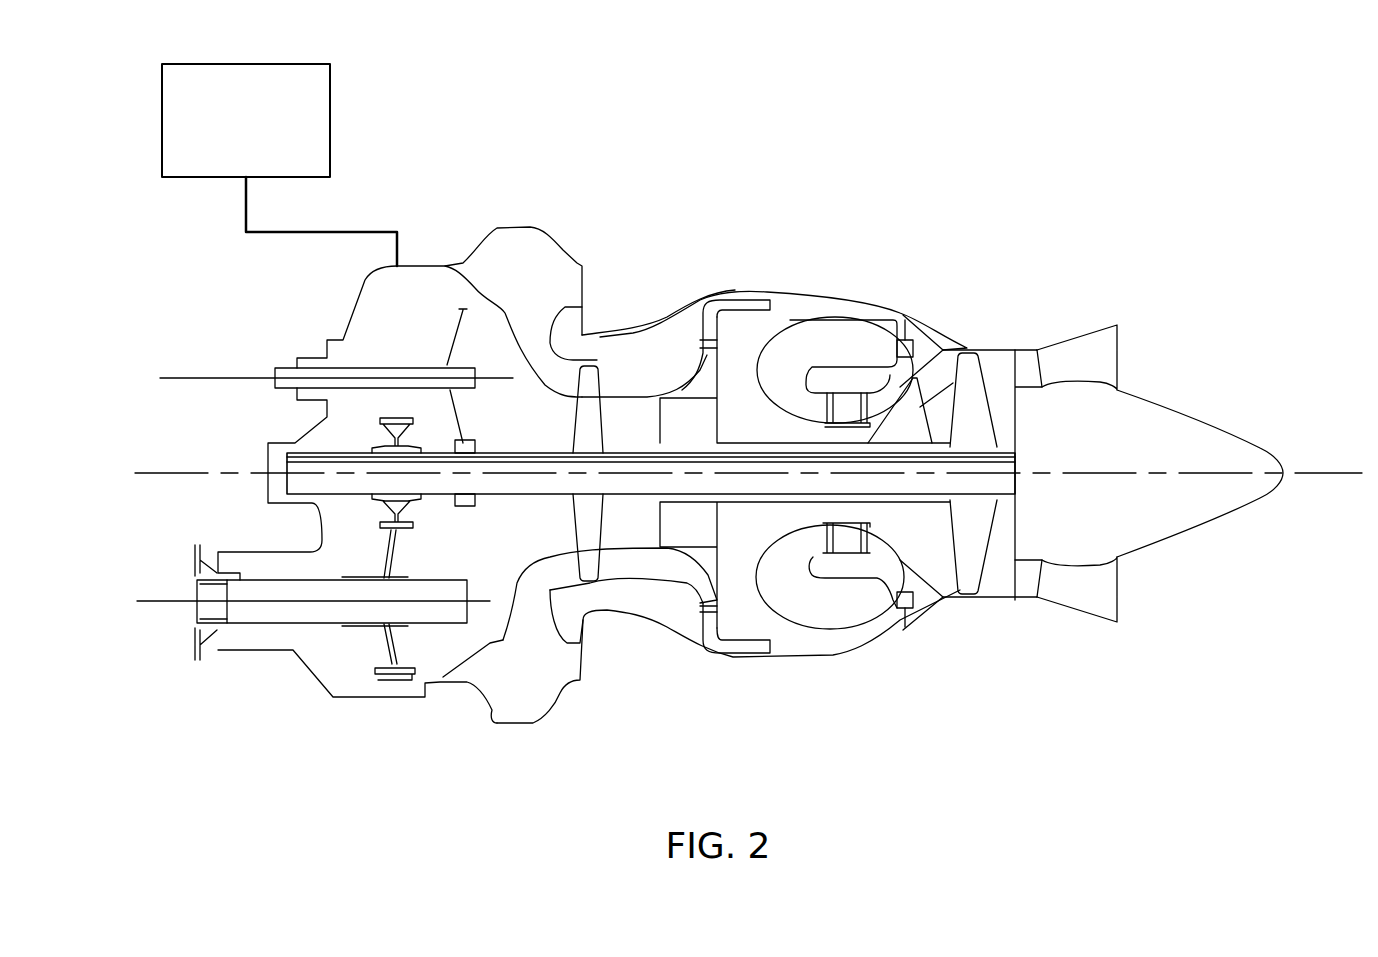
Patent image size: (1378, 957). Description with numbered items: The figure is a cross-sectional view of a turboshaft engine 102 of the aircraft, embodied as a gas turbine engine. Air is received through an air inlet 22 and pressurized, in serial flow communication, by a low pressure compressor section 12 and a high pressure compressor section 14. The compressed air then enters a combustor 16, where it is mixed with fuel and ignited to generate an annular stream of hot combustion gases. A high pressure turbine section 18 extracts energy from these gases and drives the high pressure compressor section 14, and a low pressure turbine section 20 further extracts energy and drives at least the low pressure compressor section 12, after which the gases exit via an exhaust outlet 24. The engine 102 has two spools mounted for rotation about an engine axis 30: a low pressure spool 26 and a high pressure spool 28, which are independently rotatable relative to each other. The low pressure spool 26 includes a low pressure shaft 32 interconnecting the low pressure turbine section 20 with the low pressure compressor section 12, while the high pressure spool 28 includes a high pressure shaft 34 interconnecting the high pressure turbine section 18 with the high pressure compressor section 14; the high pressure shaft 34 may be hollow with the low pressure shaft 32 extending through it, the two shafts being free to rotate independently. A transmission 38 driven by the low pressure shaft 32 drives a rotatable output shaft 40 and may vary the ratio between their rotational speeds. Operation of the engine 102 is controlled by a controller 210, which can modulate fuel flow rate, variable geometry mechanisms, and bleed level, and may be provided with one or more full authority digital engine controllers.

The turboshaft engine 102 is at (1082, 243).
The controller 210 is at (222, 158).
The low pressure compressor section 12 is at (588, 378).
The high pressure compressor section 14 is at (692, 410).
The combustor 16 is at (847, 350).
The high pressure turbine section 18 is at (897, 532).
The low pressure turbine section 20 is at (973, 372).
The air inlet 22 is at (478, 695).
The exhaust outlet 24 is at (1100, 597).
The low pressure spool 26 is at (617, 496).
The high pressure spool 28 is at (733, 498).
The engine axis 30 is at (1342, 465).
The low pressure shaft 32 is at (521, 496).
The high pressure shaft 34 is at (793, 494).
The transmission 38 is at (362, 521).
The output shaft 40 is at (262, 608).